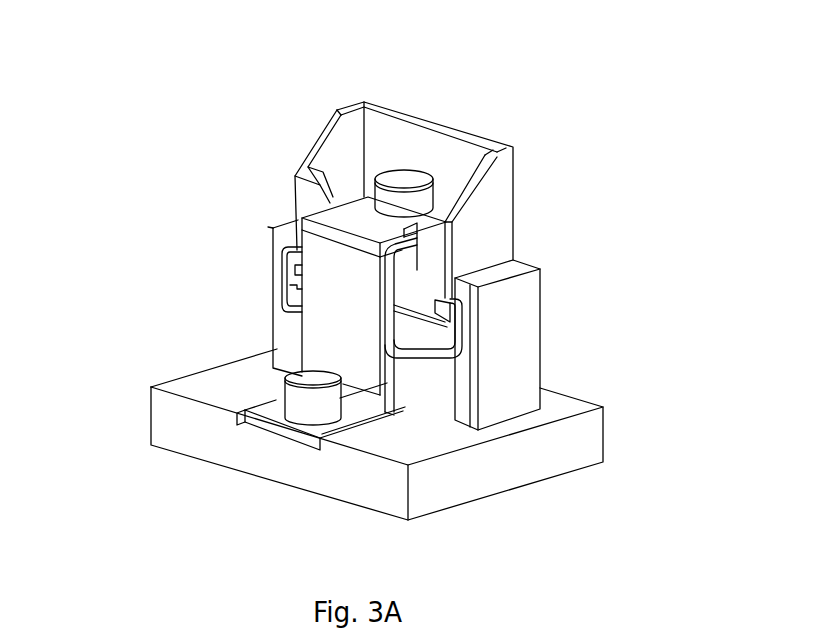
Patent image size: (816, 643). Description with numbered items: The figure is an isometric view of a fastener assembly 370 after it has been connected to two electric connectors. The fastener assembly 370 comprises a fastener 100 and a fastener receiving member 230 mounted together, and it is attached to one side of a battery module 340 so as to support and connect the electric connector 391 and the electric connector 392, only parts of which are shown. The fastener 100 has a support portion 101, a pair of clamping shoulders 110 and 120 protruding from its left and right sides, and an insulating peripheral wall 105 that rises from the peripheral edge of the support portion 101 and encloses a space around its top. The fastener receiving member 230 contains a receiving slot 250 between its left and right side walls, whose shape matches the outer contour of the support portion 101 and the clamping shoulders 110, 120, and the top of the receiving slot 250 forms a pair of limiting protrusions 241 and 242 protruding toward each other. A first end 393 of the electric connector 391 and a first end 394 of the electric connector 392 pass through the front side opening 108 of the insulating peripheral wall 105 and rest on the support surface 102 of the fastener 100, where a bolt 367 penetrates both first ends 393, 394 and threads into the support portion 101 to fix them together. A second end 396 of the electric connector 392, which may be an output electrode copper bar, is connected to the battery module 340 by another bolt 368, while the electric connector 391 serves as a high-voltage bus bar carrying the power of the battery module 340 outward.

The fastener 100 is at (503, 183).
The support portion 101 is at (423, 337).
The support surface 102 is at (412, 256).
The insulating peripheral wall 105 is at (443, 145).
The front side opening 108 is at (333, 210).
The clamping shoulder 110 is at (292, 267).
The clamping shoulder 120 is at (452, 305).
The fastener receiving member 230 is at (283, 323).
The limiting protrusion 241 is at (278, 228).
The limiting protrusion 242 is at (460, 288).
The receiving slot 250 is at (453, 352).
The battery module 340 is at (190, 432).
The bolt 367 is at (390, 175).
The bolt 368 is at (300, 400).
The fastener assembly 370 is at (647, 157).
The electric connector 391 is at (335, 213).
The electric connector 392 is at (327, 355).
The first end 393 is at (358, 205).
The first end 394 is at (407, 252).
The second end 396 is at (297, 437).